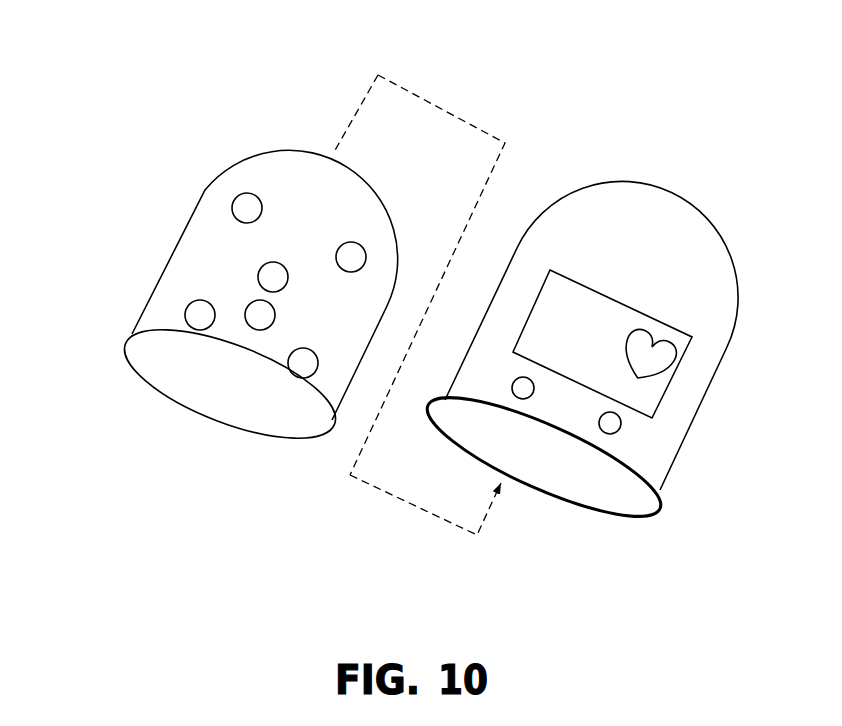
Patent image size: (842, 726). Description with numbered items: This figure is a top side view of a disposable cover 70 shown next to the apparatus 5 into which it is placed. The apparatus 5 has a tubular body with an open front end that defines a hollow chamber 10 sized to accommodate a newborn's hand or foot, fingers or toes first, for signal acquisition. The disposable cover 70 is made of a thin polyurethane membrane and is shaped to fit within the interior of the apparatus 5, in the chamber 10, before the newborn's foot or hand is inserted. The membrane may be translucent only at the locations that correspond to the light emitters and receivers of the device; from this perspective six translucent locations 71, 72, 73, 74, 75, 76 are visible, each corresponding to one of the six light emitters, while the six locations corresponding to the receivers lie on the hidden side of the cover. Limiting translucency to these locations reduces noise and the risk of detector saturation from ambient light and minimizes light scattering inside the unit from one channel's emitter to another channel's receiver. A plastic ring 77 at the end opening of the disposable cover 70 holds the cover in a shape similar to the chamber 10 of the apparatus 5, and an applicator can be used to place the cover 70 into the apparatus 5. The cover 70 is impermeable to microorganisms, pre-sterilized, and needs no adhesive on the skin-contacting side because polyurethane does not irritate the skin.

The apparatus 5 is at (604, 398).
The chamber 10 is at (613, 481).
The disposable cover 70 is at (217, 298).
The translucent location 71 is at (355, 252).
The translucent location 72 is at (270, 278).
The translucent location 73 is at (250, 206).
The translucent location 74 is at (305, 365).
The translucent location 75 is at (258, 314).
The translucent location 76 is at (198, 314).
The plastic ring 77 is at (134, 336).